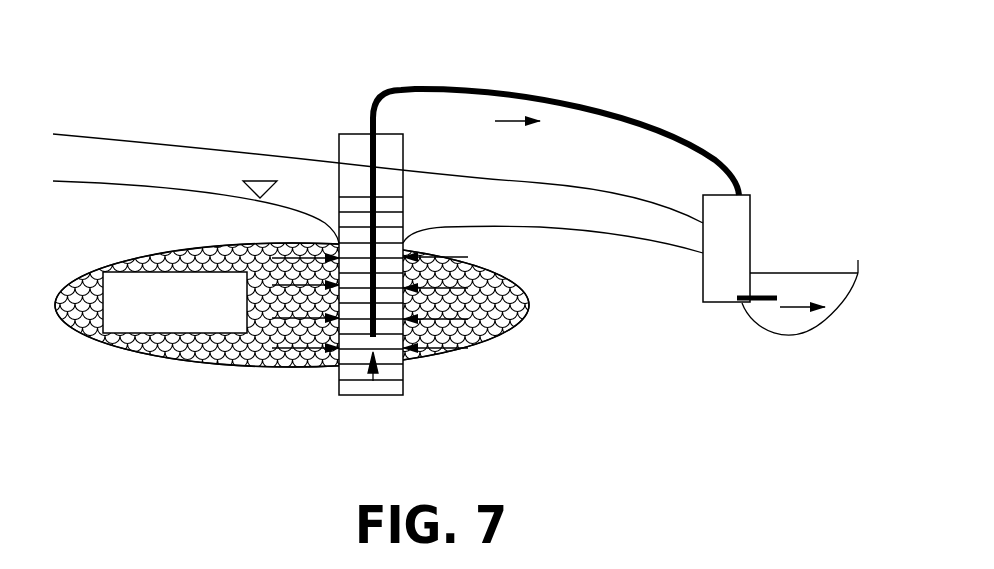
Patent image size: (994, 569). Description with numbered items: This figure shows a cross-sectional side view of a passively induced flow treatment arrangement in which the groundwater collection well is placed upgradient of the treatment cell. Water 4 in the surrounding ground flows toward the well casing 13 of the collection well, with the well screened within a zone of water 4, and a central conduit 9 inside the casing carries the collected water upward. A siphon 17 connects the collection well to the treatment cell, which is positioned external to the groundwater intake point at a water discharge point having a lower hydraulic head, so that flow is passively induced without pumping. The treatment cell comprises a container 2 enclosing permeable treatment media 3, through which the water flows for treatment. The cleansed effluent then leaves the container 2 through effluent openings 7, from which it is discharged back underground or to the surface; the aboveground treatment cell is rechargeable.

The container 2 is at (750, 195).
The treatment media 3 is at (716, 218).
The water 4 is at (175, 302).
The effluent openings 7 is at (773, 293).
The central conduit 9 is at (382, 390).
The well casing 13 is at (340, 387).
The siphon 17 is at (520, 90).